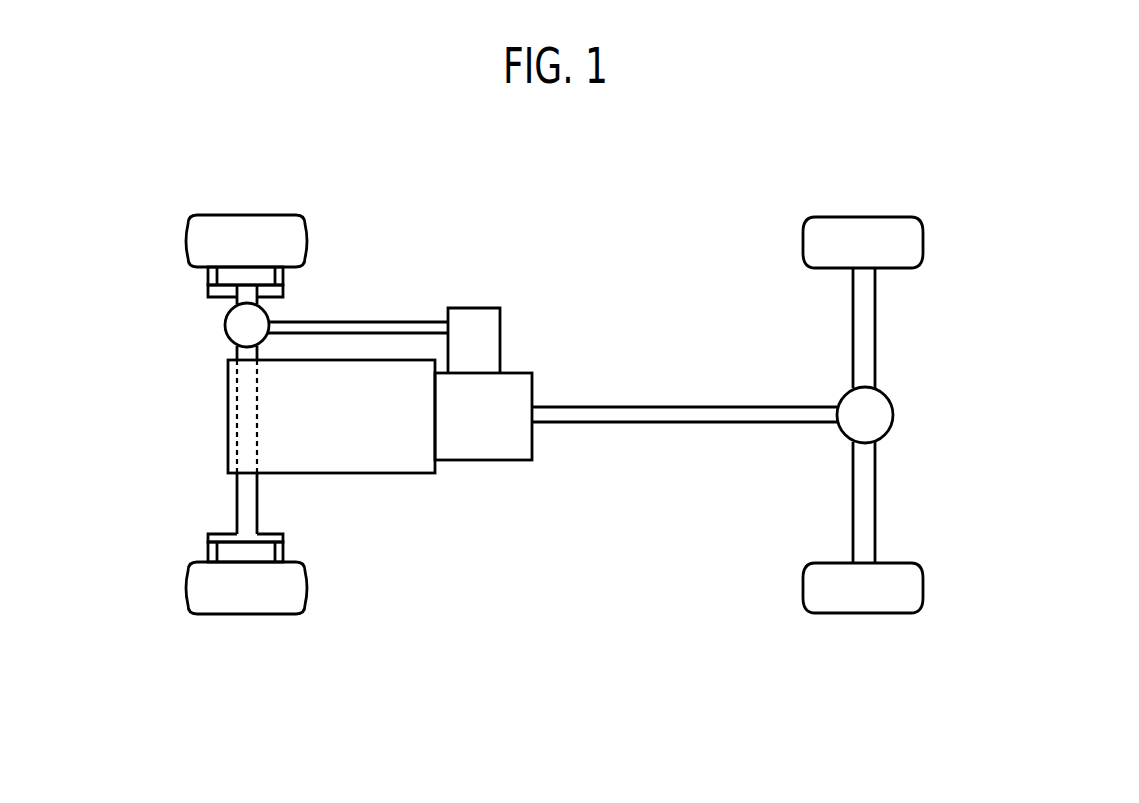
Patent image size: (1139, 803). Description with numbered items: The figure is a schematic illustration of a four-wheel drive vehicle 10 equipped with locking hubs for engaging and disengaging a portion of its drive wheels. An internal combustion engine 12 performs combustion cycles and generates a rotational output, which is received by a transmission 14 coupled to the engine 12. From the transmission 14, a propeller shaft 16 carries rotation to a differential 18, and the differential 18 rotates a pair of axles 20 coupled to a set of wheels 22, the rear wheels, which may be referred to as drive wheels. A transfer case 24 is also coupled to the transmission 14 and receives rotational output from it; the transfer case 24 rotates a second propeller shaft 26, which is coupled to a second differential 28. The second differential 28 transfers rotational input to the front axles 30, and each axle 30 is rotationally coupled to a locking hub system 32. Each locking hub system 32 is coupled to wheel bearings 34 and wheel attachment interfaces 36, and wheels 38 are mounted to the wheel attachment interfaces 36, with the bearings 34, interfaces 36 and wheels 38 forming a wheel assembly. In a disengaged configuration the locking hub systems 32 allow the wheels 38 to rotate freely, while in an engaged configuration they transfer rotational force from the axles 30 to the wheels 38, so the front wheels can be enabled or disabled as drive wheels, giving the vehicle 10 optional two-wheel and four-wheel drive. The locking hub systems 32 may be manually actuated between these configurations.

The four-wheel drive vehicle 10 is at (1070, 233).
The internal combustion engine 12 is at (345, 429).
The transmission 14 is at (496, 429).
The propeller shaft 16 is at (709, 407).
The differential 18 is at (893, 415).
The axles 20 is at (875, 338).
The set of wheels 22 is at (923, 242).
The transfer case 24 is at (497, 308).
The second propeller shaft 26 is at (412, 322).
The second differential 28 is at (266, 338).
The axles 30 is at (237, 305).
The locking hub system 32 is at (262, 266).
The wheel bearings 34 is at (207, 296).
The wheel attachment interfaces 36 is at (208, 277).
The wheels 38 is at (188, 242).